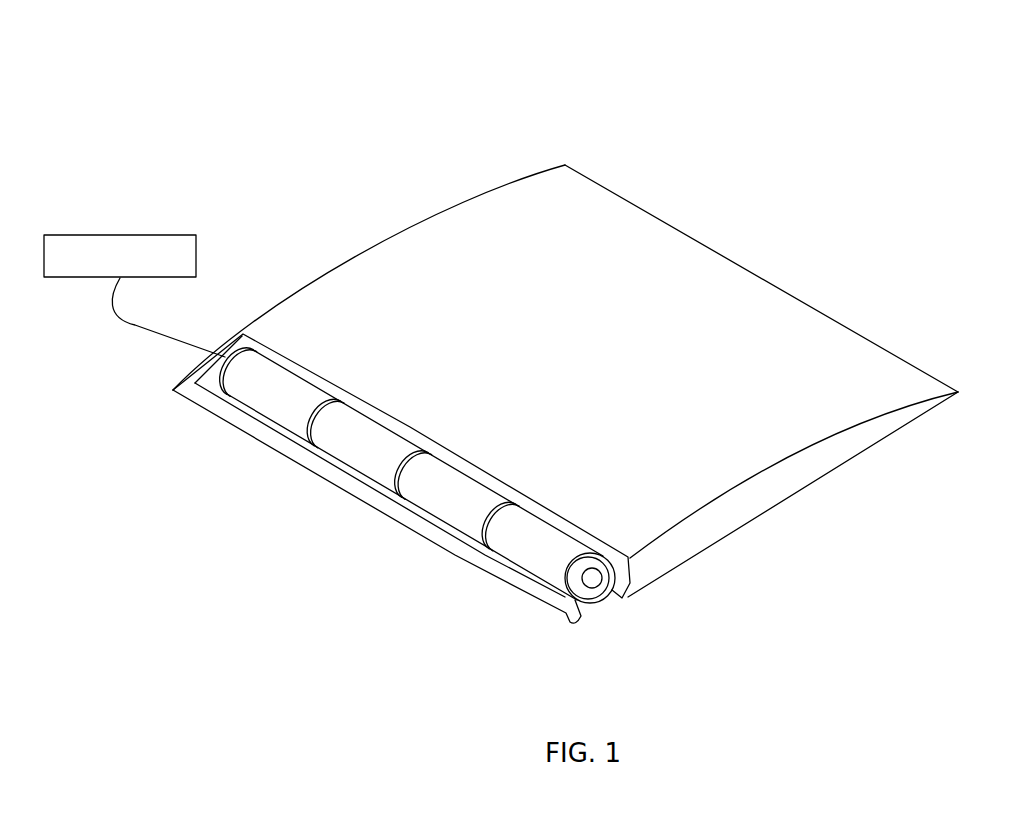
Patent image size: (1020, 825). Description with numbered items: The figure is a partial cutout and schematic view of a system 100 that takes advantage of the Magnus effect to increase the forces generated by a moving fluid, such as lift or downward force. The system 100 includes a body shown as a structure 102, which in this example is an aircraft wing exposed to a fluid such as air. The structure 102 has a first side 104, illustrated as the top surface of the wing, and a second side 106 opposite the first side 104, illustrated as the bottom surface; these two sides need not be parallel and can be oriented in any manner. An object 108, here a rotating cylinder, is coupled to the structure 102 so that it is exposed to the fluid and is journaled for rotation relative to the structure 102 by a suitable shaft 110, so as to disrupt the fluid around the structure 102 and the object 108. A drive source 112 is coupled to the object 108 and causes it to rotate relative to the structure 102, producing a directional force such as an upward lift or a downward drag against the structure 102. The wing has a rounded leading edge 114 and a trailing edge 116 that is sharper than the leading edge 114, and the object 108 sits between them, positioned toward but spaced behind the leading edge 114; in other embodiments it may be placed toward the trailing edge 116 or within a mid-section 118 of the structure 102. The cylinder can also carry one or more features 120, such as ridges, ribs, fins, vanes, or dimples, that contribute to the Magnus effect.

The system 100 is at (449, 121).
The structure 102 is at (804, 475).
The first side 104 is at (468, 264).
The second side 106 is at (732, 541).
The object 108 is at (622, 574).
The shaft 110 is at (596, 588).
The drive source 112 is at (197, 250).
The leading edge 114 is at (193, 402).
The trailing edge 116 is at (760, 276).
The mid-section 118 is at (407, 238).
The features 120 is at (383, 473).